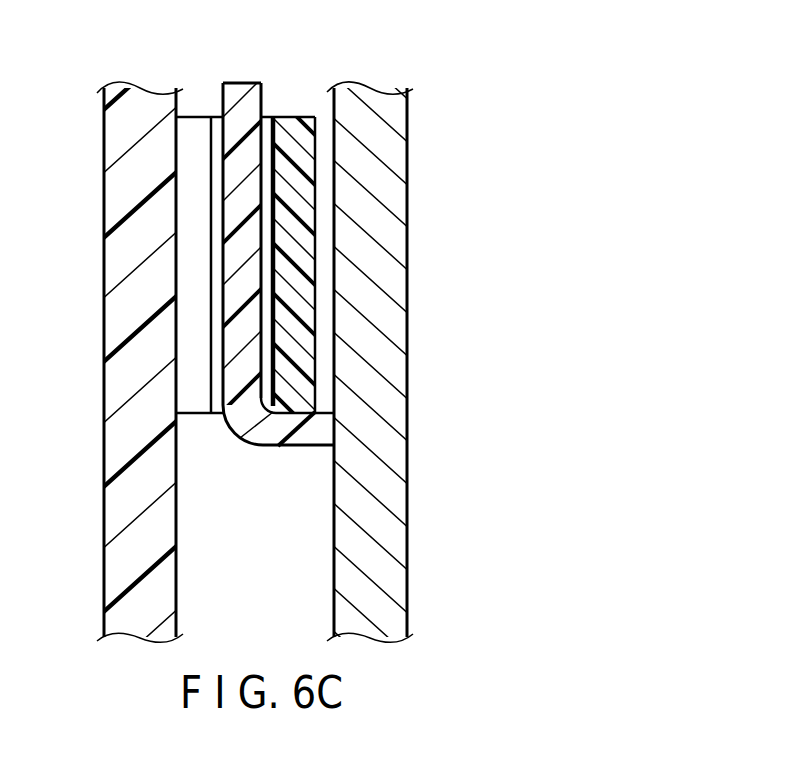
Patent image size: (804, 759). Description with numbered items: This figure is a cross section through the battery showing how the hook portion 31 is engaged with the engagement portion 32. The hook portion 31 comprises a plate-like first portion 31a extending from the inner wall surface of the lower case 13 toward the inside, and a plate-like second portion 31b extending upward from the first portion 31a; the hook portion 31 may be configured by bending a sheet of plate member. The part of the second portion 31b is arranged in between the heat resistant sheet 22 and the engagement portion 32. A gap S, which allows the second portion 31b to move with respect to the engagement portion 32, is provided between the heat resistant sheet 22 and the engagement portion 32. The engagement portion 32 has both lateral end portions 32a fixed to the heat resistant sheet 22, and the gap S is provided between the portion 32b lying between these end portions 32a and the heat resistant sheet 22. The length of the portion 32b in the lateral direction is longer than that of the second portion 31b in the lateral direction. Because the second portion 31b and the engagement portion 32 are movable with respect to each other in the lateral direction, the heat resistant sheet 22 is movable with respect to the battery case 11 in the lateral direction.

The battery case 11 is at (387, 550).
The lower case 13 is at (393, 365).
The heat resistant sheet 22 is at (108, 549).
The hook portion 31 is at (344, 290).
The first portion 31a is at (307, 436).
The second portion 31b is at (245, 273).
The engagement portion 32 is at (240, 228).
The end portions 32a is at (193, 123).
The portion between both end portions 32b is at (293, 125).
The gap S is at (215, 322).